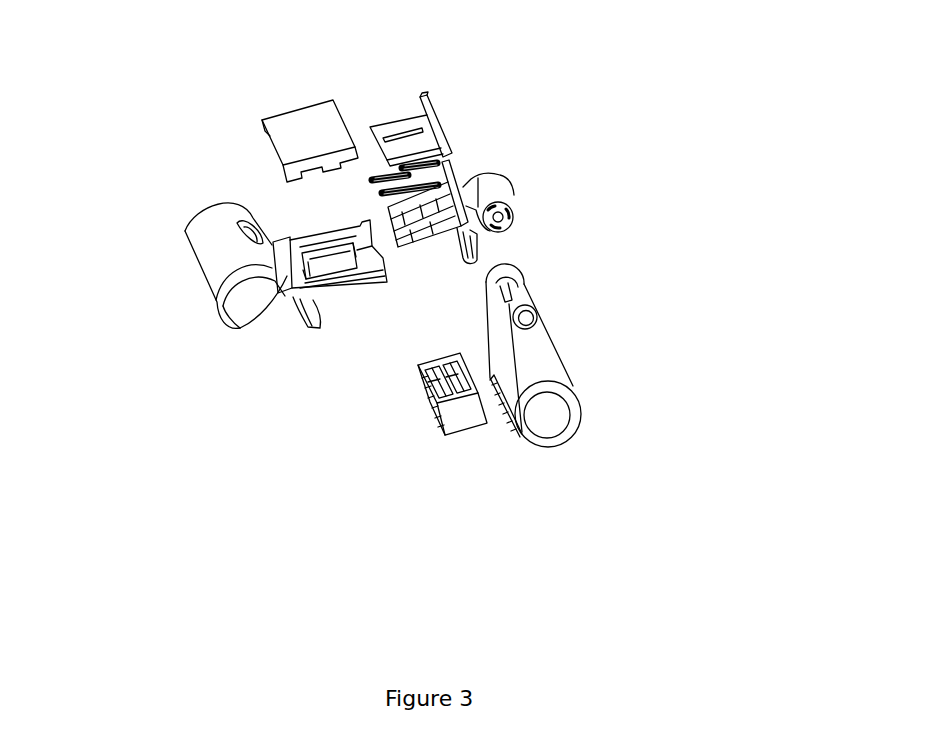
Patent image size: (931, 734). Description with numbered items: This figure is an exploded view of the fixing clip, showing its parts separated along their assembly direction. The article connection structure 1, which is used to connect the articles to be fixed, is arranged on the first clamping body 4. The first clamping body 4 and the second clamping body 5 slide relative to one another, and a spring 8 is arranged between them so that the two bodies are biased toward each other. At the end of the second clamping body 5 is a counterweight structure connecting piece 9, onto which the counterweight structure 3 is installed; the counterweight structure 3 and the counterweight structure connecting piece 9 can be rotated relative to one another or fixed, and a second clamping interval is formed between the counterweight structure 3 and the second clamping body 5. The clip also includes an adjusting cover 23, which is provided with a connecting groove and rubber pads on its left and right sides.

The article connection structure 1 is at (215, 248).
The counterweight structure 3 is at (543, 370).
The first clamping body 4 is at (308, 328).
The second clamping body 5 is at (447, 238).
The spring 8 is at (448, 168).
The counterweight structure connecting piece 9 is at (513, 213).
The adjusting cover 23 is at (460, 435).